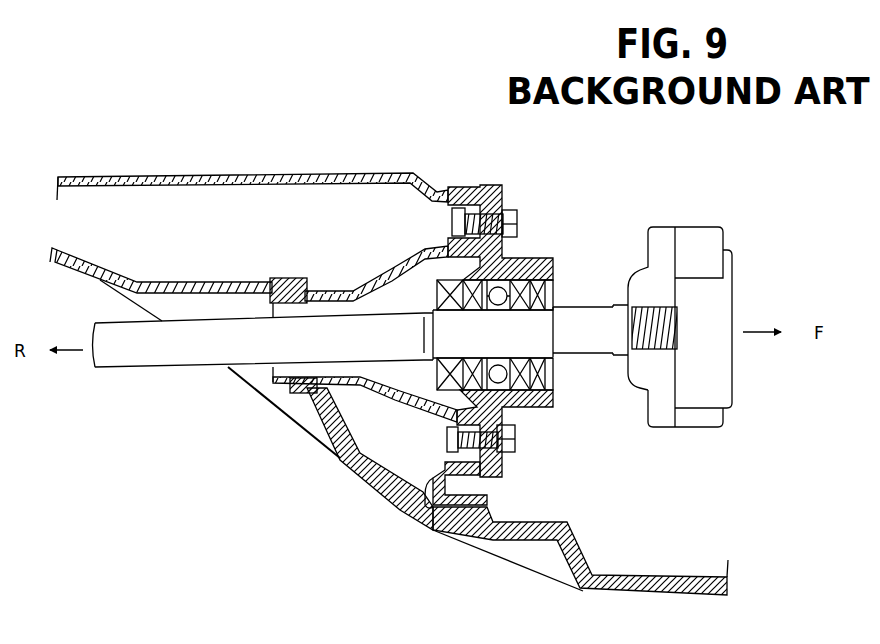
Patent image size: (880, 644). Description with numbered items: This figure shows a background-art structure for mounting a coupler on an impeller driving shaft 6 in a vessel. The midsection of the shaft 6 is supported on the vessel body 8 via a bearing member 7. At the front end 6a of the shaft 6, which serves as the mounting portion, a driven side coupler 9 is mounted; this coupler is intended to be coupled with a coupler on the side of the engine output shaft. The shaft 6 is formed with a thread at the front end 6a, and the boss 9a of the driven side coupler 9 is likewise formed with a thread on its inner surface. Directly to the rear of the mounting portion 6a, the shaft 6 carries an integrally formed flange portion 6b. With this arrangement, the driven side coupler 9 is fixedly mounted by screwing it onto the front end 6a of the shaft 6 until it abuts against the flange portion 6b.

The impeller driving shaft 6 is at (195, 355).
The front end of the shaft 6a is at (678, 315).
The flange portion 6b is at (622, 300).
The bearing member 7 is at (535, 252).
The vessel body 8 is at (323, 166).
The driven side coupler 9 is at (667, 325).
The boss 9a is at (643, 367).